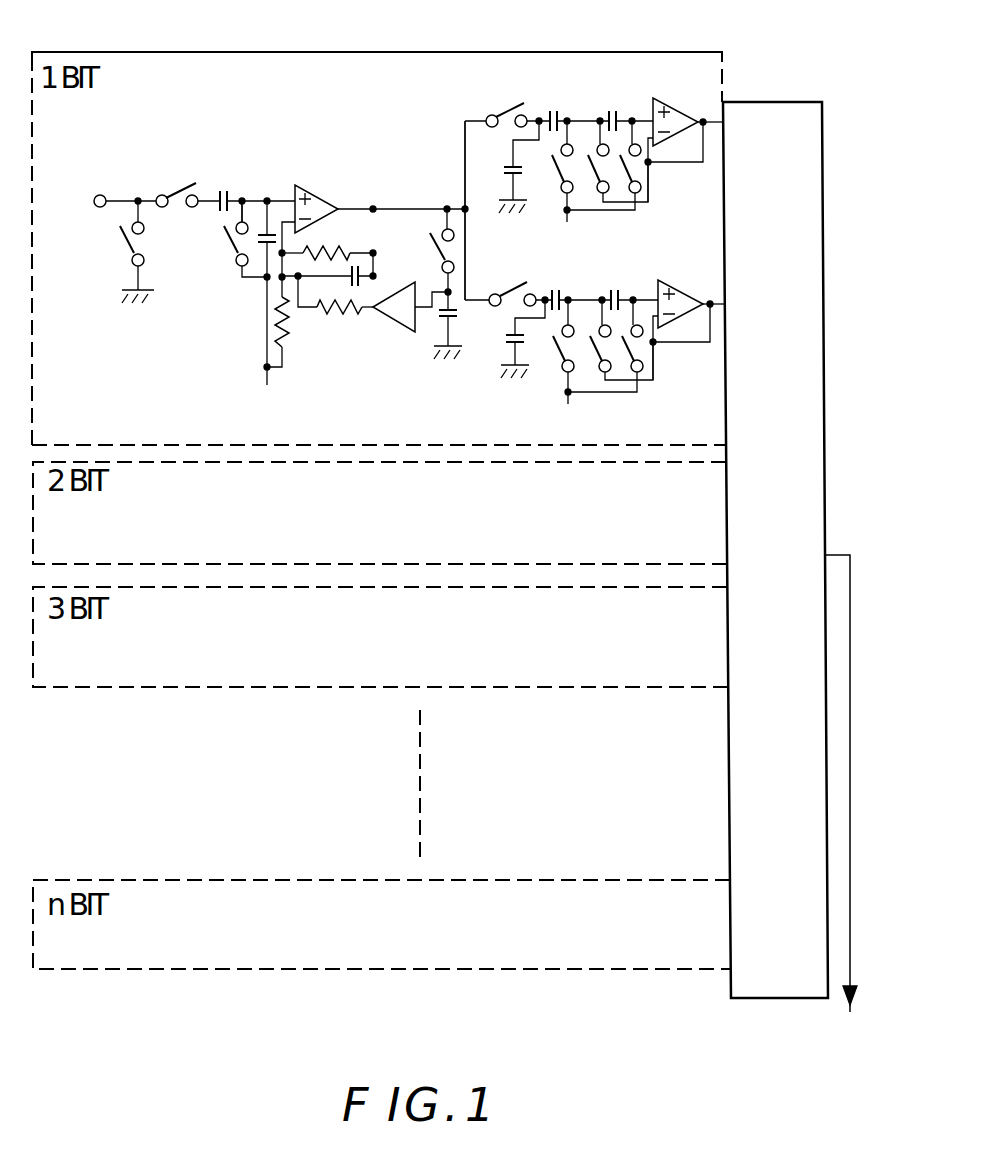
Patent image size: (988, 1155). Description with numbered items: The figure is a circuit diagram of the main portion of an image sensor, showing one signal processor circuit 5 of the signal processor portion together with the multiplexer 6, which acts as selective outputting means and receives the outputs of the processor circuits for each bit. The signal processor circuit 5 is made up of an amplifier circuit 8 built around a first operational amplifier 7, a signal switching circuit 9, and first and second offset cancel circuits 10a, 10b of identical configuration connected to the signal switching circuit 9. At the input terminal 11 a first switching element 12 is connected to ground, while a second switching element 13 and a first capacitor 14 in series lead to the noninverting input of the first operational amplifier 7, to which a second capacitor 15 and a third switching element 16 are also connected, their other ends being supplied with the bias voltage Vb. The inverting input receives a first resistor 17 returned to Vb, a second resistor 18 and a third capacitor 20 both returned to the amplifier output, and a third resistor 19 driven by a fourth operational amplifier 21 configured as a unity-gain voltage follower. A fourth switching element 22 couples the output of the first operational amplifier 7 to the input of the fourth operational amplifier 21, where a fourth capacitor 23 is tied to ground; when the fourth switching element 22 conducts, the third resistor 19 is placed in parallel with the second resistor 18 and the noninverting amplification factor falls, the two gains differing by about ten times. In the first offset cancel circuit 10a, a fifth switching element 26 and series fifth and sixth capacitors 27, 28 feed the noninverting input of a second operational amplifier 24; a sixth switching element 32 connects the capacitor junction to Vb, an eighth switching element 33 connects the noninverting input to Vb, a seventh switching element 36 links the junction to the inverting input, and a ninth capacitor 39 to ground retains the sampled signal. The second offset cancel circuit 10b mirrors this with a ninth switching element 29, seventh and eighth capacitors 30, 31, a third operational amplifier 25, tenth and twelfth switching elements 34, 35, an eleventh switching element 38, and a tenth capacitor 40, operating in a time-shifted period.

The signal processor circuit 5 is at (693, 47).
The multiplexer 6 is at (826, 497).
The first operational amplifier 7 is at (313, 184).
The amplifier circuit 8 is at (280, 190).
The signal switching circuit 9 is at (489, 321).
The first offset cancel circuit 10a is at (658, 195).
The second offset cancel circuit 10b is at (660, 345).
The input terminal 11 is at (101, 194).
The first switching element 12 is at (128, 249).
The second switching element 13 is at (181, 190).
The first capacitor 14 is at (219, 189).
The second capacitor 15 is at (258, 248).
The third switching element 16 is at (231, 249).
The first resistor 17 is at (284, 342).
The second resistor 18 is at (345, 245).
The third resistor 19 is at (357, 311).
The third capacitor 20 is at (362, 281).
The fourth operational amplifier 21 is at (394, 320).
The fourth switching element 22 is at (428, 238).
The fourth capacitor 23 is at (440, 320).
The second operational amplifier 24 is at (692, 86).
The third operational amplifier 25 is at (660, 291).
The fifth switching element 26 is at (500, 113).
The fifth capacitor 27 is at (568, 94).
The sixth capacitor 28 is at (610, 111).
The ninth switching element 29 is at (509, 290).
The seventh capacitor 30 is at (553, 292).
The eighth capacitor 31 is at (603, 292).
The sixth switching element 32 is at (553, 170).
The eighth switching element 33 is at (640, 172).
The tenth switching element 34 is at (556, 344).
The twelfth switching element 35 is at (626, 355).
The seventh switching element 36 is at (590, 175).
The eleventh switching element 38 is at (594, 350).
The ninth capacitor 39 is at (505, 183).
The tenth capacitor 40 is at (507, 354).